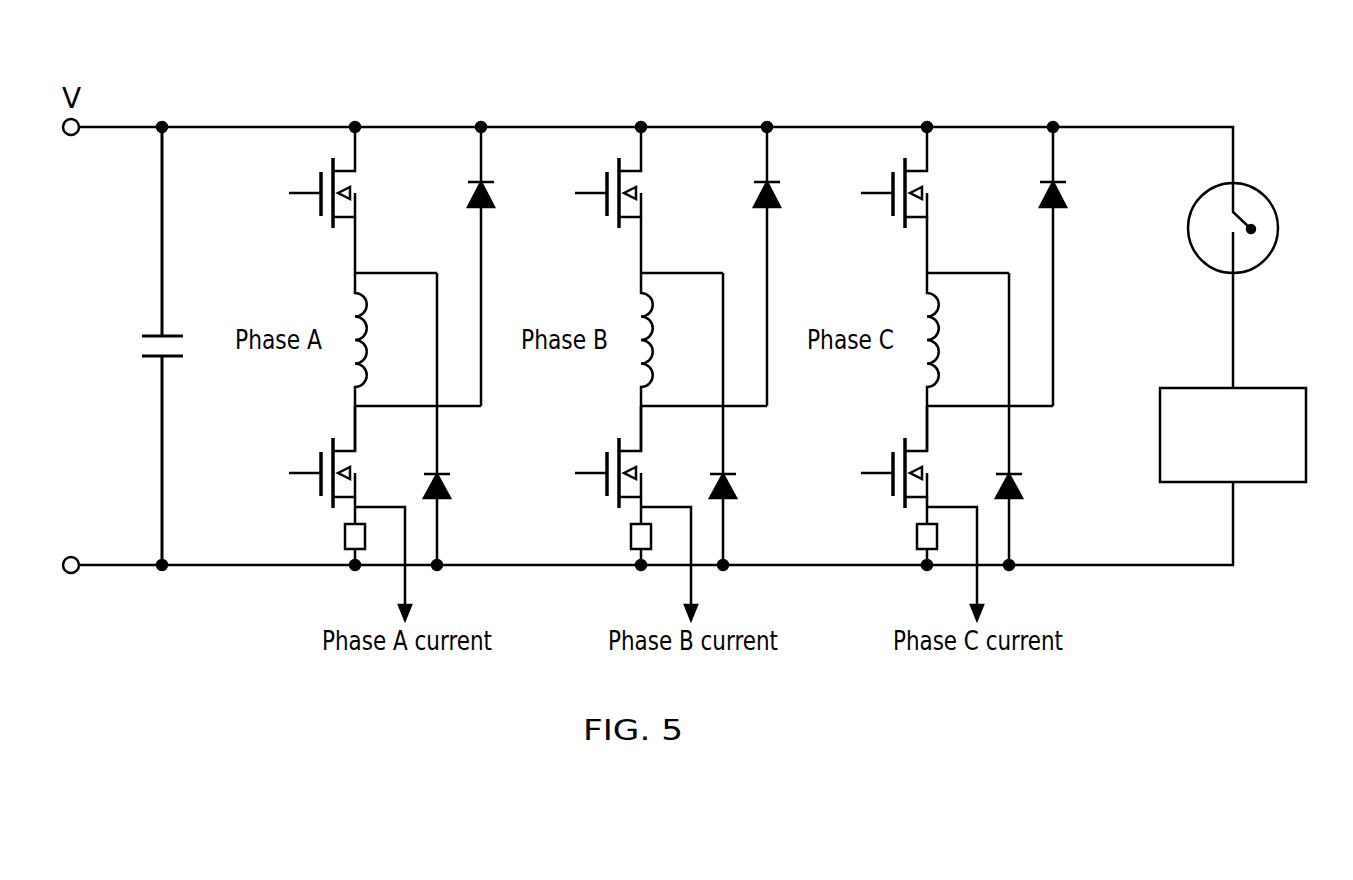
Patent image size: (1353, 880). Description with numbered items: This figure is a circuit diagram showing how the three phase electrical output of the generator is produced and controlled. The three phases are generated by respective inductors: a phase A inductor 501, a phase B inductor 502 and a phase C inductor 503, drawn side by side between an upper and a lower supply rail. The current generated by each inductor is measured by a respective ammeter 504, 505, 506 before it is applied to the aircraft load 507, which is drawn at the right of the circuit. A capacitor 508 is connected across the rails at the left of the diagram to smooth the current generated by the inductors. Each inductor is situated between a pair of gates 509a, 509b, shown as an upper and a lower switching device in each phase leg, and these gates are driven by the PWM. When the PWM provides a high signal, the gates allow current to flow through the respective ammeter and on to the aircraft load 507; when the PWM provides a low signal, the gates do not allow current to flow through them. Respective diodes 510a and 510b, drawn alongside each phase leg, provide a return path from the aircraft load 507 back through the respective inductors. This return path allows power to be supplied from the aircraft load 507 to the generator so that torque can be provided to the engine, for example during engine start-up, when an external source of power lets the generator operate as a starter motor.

The phase A inductor 501 is at (325, 298).
The phase B inductor 502 is at (620, 298).
The phase C inductor 503 is at (912, 300).
The ammeter 504 is at (343, 537).
The ammeter 505 is at (628, 538).
The ammeter 506 is at (913, 537).
The aircraft load 507 is at (1240, 483).
The capacitor 508 is at (140, 345).
The gate 509a is at (314, 160).
The gate 509b is at (315, 487).
The diode 510a is at (745, 184).
The diode 510b is at (735, 490).